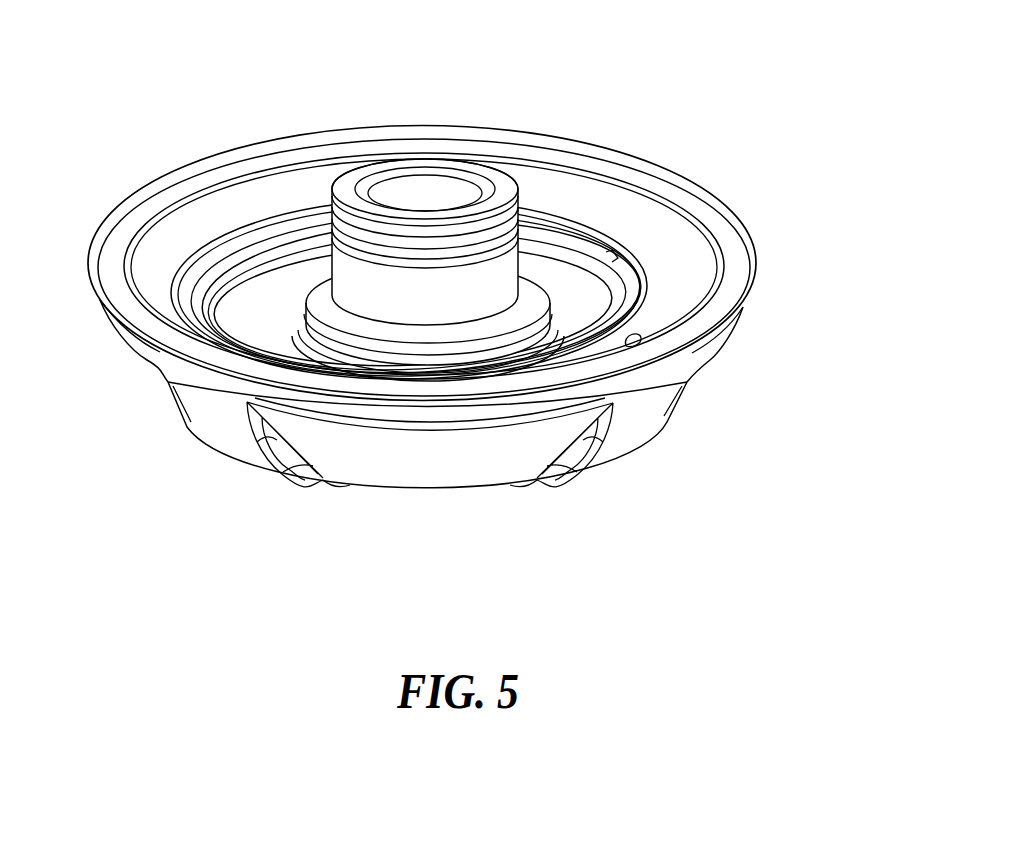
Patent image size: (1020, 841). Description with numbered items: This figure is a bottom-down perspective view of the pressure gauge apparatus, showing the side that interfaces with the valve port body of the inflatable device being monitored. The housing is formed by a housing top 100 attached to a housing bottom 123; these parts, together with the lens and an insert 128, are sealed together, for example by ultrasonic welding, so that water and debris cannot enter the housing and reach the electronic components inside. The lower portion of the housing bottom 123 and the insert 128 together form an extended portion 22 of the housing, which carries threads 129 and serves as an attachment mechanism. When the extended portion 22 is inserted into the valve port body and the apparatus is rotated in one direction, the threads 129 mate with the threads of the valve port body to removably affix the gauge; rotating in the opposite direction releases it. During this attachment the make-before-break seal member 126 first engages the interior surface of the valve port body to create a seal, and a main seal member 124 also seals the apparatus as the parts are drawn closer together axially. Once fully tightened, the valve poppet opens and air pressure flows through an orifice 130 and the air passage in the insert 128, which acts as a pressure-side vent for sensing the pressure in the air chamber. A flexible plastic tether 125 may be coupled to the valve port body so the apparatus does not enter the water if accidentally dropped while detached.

The extended portion 22 is at (315, 137).
The housing top 100 is at (643, 448).
The housing bottom 123 is at (747, 223).
The main seal member 124 is at (557, 335).
The tether 125 is at (622, 346).
The make-before-break seal member 126 is at (522, 218).
The insert 128 is at (487, 165).
The threads 129 is at (527, 288).
The orifice 130 is at (427, 192).